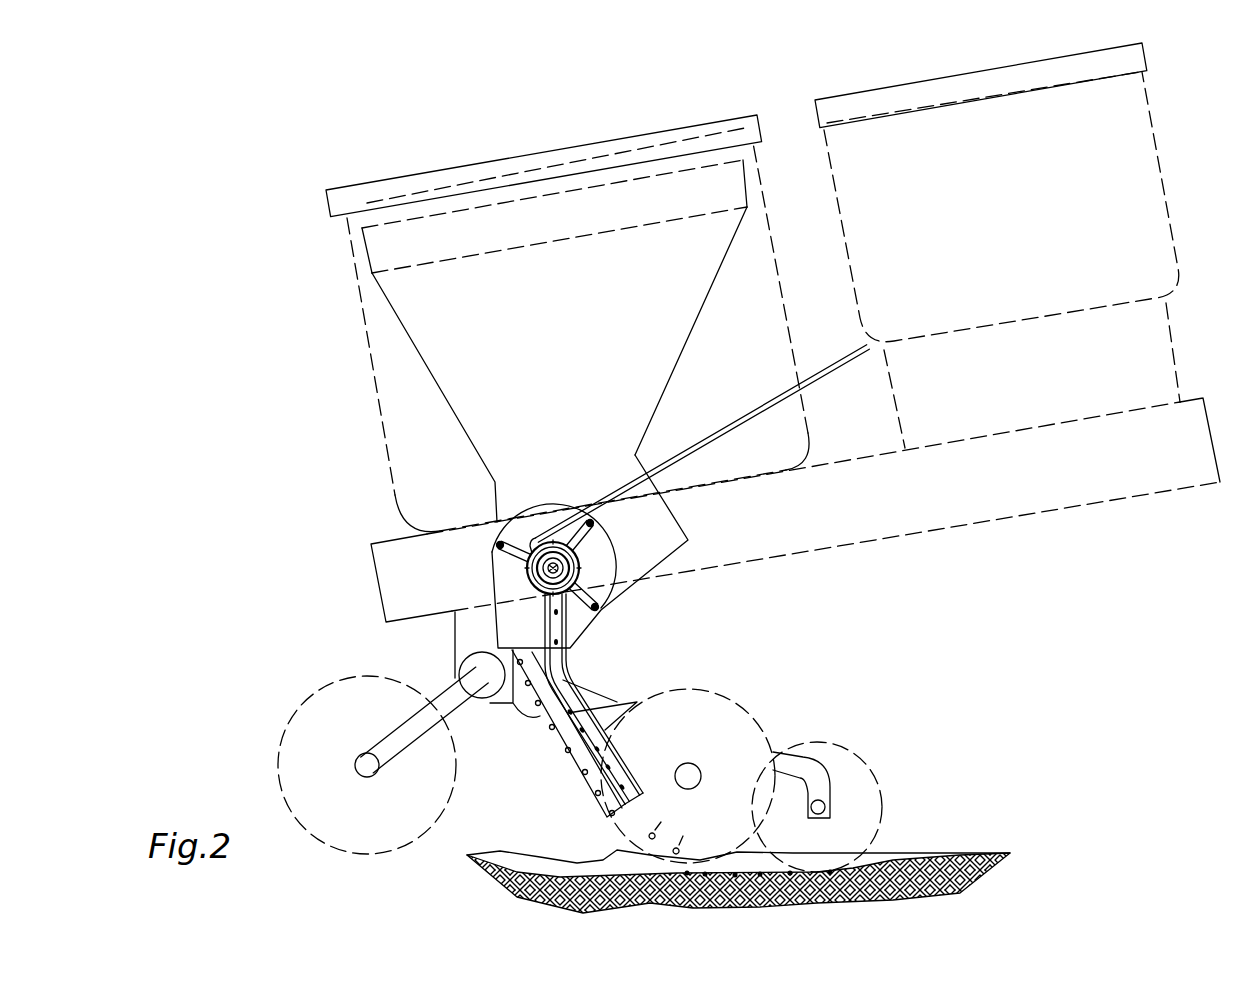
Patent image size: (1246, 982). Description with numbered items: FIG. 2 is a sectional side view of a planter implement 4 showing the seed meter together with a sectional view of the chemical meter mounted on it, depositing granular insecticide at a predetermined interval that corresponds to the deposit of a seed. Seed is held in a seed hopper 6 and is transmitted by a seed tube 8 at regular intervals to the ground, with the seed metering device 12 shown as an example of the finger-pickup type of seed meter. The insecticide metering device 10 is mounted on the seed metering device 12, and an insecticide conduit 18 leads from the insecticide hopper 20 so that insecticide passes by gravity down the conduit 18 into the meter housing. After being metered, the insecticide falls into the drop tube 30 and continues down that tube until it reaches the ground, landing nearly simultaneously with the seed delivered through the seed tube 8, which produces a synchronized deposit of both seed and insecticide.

The planter implement 4 is at (300, 389).
The seed hopper 6 is at (390, 180).
The seed tube 8 is at (555, 741).
The insecticide metering device 10 is at (512, 572).
The seed metering device 12 is at (488, 553).
The insecticide conduit 18 is at (823, 373).
The insecticide hopper 20 is at (858, 88).
The drop tube 30 is at (568, 678).